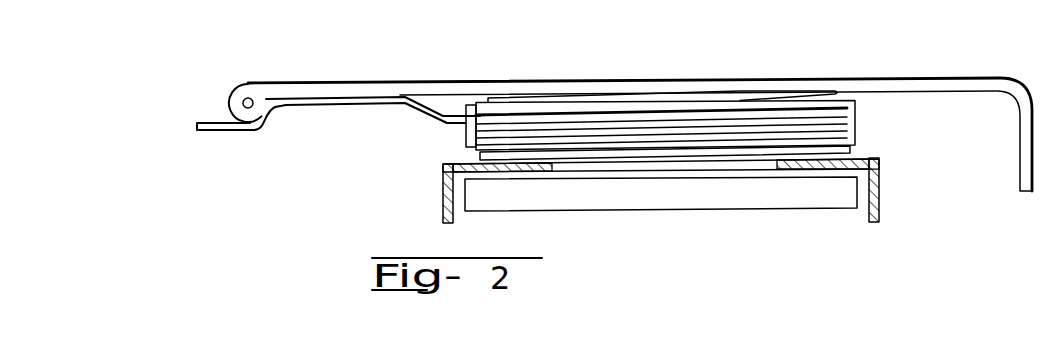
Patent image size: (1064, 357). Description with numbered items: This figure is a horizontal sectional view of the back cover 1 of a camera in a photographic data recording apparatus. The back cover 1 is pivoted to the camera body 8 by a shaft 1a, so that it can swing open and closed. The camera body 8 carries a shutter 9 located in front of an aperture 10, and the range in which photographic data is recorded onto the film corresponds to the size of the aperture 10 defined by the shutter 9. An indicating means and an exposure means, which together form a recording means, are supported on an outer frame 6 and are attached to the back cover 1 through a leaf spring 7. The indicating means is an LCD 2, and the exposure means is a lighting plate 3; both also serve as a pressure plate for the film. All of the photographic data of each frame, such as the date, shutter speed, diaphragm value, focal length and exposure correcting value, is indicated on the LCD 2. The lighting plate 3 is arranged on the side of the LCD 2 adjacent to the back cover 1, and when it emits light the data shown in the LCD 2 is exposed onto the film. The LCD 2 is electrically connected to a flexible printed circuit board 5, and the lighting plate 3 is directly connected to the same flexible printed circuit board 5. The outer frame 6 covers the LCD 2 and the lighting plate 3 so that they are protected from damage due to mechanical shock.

The back cover 1 is at (967, 87).
The shaft 1a is at (250, 98).
The LCD 2 is at (762, 150).
The lighting plate 3 is at (838, 126).
The flexible printed circuit board 5 is at (417, 97).
The outer frame 6 is at (478, 110).
The leaf spring 7 is at (574, 98).
The camera body 8 is at (880, 207).
The shutter 9 is at (831, 198).
The aperture 10 is at (553, 170).